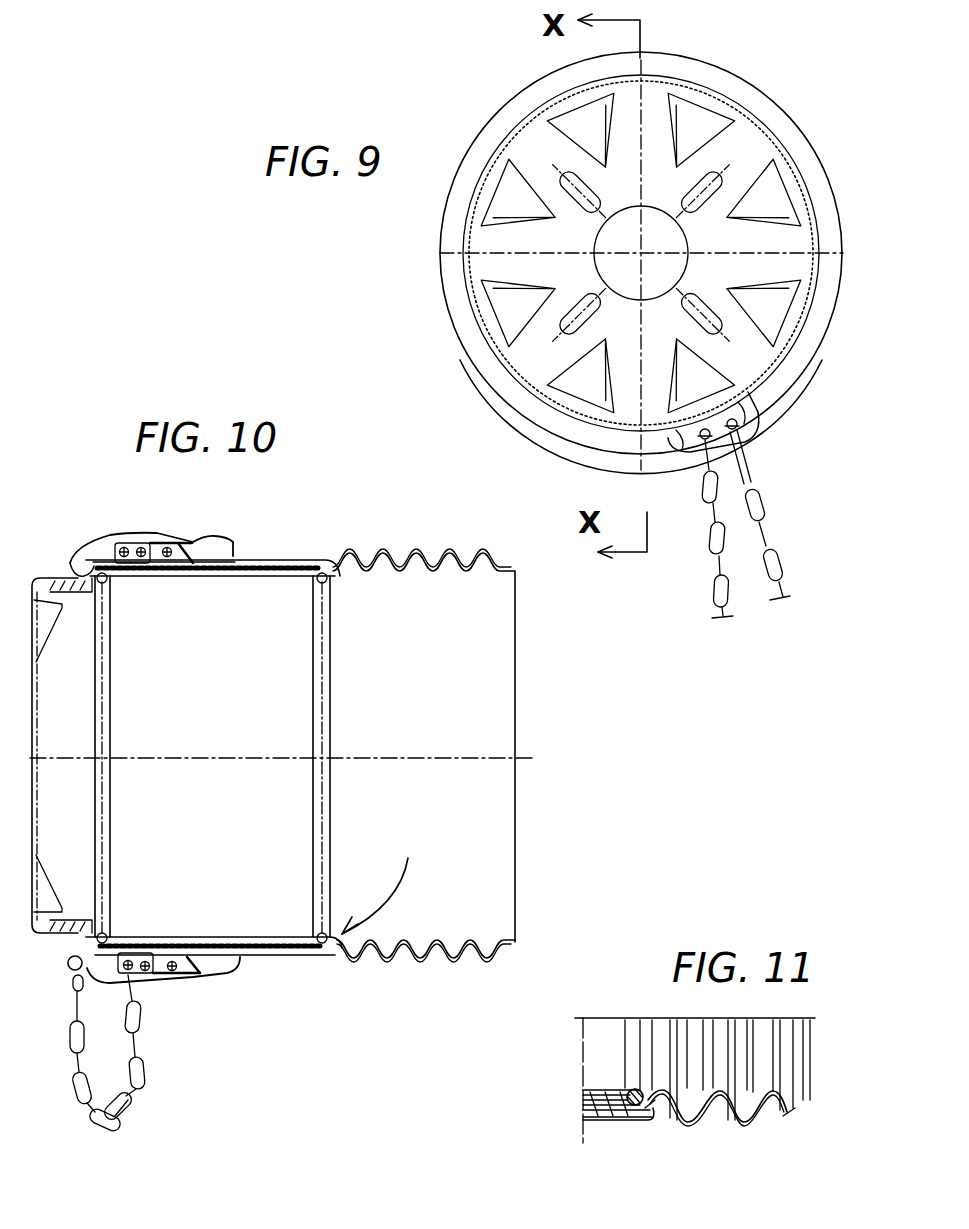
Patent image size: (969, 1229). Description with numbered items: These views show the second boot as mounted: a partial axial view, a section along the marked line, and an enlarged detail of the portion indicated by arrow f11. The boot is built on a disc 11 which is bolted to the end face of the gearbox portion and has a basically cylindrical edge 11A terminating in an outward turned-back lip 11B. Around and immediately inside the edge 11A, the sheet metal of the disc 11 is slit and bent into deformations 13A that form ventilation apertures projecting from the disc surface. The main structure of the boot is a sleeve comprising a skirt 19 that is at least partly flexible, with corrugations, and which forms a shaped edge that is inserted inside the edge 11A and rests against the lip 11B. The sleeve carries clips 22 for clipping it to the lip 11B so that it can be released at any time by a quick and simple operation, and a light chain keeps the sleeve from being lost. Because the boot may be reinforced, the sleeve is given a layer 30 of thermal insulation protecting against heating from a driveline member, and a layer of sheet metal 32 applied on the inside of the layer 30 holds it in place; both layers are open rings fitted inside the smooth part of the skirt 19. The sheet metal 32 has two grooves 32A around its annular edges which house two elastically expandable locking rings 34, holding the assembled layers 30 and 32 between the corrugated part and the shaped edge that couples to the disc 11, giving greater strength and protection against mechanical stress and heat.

In FIG. 9, the disc 11 is at (748, 142).
In FIG. 9, the cylindrical edge 11A is at (487, 338).
In FIG. 9, the outward turned-back lip 11B is at (512, 403).
In FIG. 9, the deformations 13A is at (500, 190).
In FIG. 10, the skirt 19 is at (425, 552).
In FIG. 11, the skirt 19 is at (740, 1124).
In FIG. 10, the clips 22 is at (185, 548).
In FIG. 10, the layer of thermal insulation 30 is at (278, 560).
In FIG. 11, the layer of thermal insulation 30 is at (587, 1094).
In FIG. 10, the layer of sheet metal 32 is at (238, 935).
In FIG. 11, the layer of sheet metal 32 is at (600, 1090).
In FIG. 11, the grooves 32A is at (646, 1118).
In FIG. 11, the locking rings 34 is at (628, 1092).
In FIG. 10, the arrow f11 is at (400, 896).